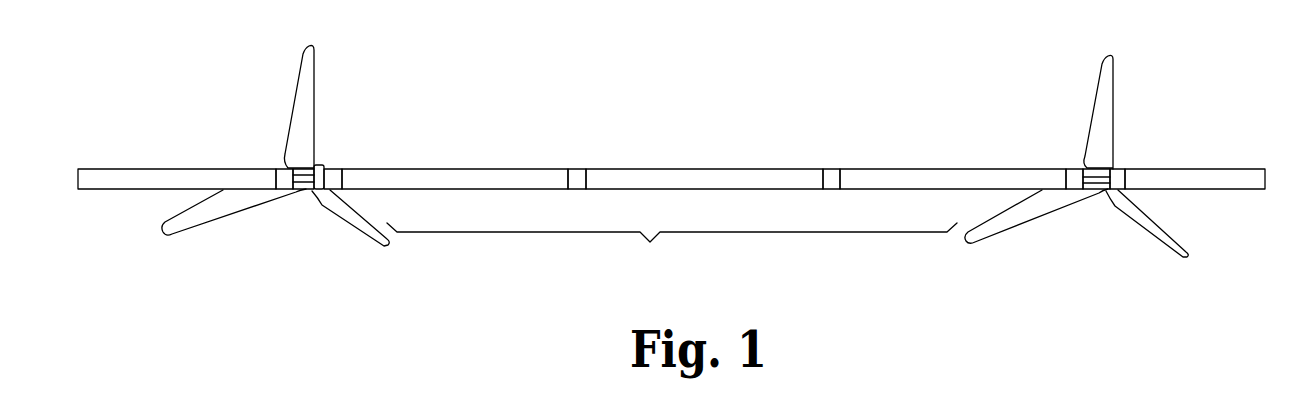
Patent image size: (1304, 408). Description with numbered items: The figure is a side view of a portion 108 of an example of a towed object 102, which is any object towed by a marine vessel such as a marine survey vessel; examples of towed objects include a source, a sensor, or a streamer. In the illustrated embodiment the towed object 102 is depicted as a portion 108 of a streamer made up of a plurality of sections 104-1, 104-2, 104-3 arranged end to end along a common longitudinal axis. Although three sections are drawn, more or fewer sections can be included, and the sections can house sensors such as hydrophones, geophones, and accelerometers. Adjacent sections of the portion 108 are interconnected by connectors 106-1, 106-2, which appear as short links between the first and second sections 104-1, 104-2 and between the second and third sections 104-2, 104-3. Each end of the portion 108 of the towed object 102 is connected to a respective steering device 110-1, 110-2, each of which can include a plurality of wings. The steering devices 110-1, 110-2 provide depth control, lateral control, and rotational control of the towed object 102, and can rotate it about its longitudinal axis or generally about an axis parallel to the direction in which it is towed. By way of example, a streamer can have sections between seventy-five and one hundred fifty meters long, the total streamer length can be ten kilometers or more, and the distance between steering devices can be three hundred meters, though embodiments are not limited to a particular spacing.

The towed object 102 is at (963, 40).
The section 104-1 is at (460, 169).
The section 104-2 is at (712, 169).
The section 104-3 is at (961, 169).
The connector 106-1 is at (580, 169).
The connector 106-2 is at (836, 169).
The portion of the towed object 108 is at (704, 190).
The steering device 110-1 is at (318, 82).
The steering device 110-2 is at (1114, 88).